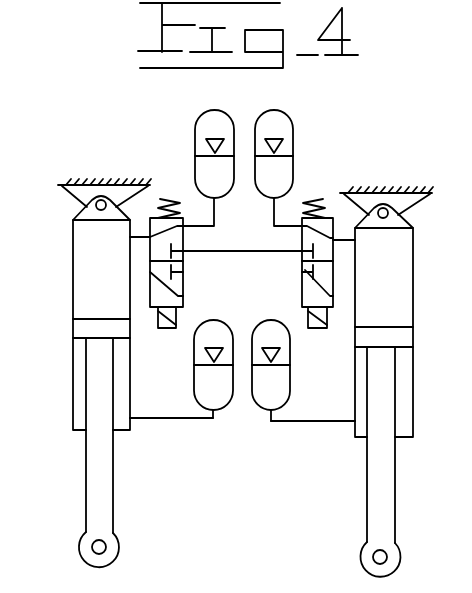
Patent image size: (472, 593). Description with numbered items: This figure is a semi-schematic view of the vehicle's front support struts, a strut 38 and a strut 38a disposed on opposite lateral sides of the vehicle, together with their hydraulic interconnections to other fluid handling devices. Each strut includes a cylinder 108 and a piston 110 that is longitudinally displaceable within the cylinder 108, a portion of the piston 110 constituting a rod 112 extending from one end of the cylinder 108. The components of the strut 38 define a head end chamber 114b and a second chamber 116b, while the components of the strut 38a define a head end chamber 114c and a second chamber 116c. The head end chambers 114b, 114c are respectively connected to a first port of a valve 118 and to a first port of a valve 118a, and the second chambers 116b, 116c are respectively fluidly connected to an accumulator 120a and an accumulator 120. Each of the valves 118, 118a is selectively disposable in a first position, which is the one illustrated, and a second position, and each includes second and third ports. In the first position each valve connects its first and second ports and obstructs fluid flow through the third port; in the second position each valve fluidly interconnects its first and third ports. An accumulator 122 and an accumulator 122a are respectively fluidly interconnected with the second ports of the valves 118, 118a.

The front strut 38 is at (418, 294).
The strut 38a is at (64, 288).
The cylinder 108 is at (73, 221).
The piston 110 is at (130, 340).
The rod 112 is at (102, 490).
The fifth chamber 114b is at (403, 283).
The seventh chamber 114c is at (121, 273).
The sixth chamber 116b is at (355, 405).
The eighth chamber 116c is at (129, 404).
The valve 118 is at (183, 258).
The valve 118a is at (302, 272).
The fourth accumulator 120 is at (225, 320).
The third accumulator 120a is at (290, 372).
The fifth accumulator 122 is at (205, 110).
The sixth accumulator 122a is at (287, 112).